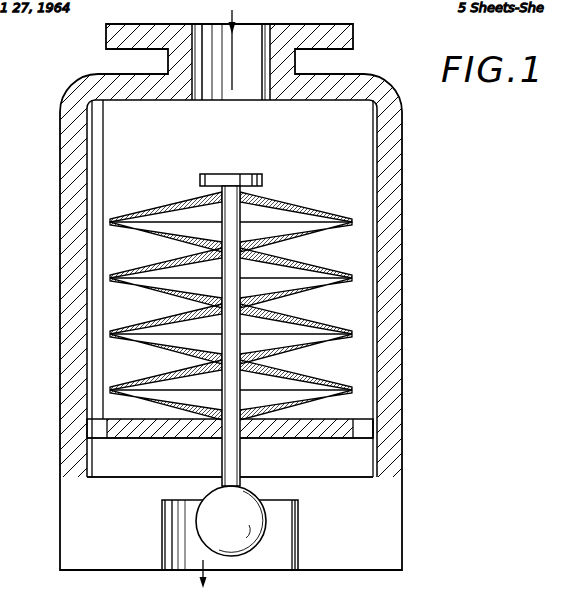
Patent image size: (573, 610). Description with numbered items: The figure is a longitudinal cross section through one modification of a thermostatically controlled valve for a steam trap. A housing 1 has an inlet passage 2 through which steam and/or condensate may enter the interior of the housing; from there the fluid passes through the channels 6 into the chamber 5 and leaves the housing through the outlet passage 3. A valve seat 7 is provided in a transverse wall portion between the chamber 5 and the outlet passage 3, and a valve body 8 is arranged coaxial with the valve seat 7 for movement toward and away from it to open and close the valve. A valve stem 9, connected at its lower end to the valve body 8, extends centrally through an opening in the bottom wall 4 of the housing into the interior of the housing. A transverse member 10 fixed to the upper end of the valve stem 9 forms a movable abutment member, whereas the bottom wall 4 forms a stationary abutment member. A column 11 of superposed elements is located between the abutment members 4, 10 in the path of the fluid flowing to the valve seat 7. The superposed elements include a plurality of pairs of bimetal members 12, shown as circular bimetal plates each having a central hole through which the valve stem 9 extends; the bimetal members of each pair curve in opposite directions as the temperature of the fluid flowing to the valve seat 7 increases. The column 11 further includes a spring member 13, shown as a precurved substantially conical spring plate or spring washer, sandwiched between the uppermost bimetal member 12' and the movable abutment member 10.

The housing 1 is at (394, 464).
The inlet passage 2 is at (253, 32).
The outlet passage 3 is at (292, 556).
The bottom wall 4 is at (340, 419).
The chamber 5 is at (312, 473).
The channels 6 is at (363, 430).
The valve seat 7 is at (248, 490).
The valve body 8 is at (236, 548).
The valve stem 9 is at (228, 392).
The transverse member 10 is at (211, 174).
The column 11 is at (230, 292).
The bimetal members 12 is at (236, 274).
The uppermost bimetal member 12' is at (274, 230).
The spring member 13 is at (300, 206).